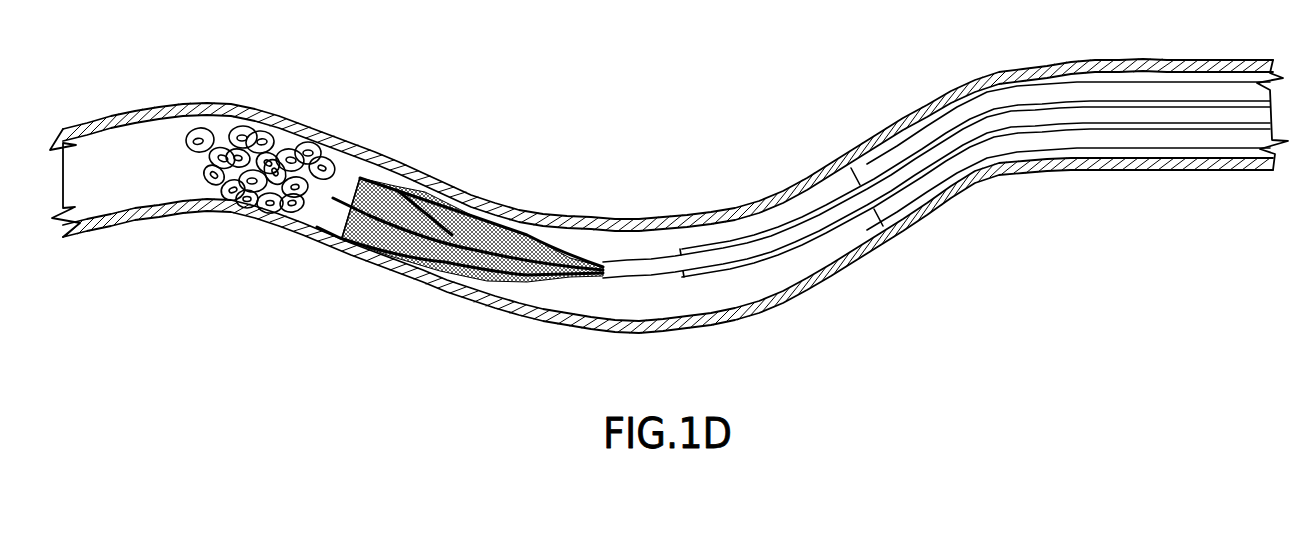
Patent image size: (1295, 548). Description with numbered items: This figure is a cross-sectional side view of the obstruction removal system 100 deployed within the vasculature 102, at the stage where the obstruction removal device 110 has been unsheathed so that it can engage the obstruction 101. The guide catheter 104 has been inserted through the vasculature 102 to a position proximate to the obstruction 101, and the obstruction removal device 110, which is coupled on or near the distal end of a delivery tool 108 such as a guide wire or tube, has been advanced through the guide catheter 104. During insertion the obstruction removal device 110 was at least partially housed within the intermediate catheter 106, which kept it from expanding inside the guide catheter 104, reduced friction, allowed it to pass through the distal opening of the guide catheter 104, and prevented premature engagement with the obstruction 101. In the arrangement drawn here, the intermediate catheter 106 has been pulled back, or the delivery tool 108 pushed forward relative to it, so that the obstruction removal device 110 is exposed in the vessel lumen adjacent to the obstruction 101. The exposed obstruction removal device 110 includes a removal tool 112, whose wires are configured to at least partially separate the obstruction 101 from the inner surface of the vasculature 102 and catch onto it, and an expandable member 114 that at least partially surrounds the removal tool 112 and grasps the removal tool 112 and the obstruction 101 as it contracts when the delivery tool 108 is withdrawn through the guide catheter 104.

The obstruction removal system 100 is at (891, 71).
The obstruction 101 is at (193, 175).
The vasculature 102 is at (665, 217).
The guide catheter 104 is at (1177, 152).
The intermediate catheter 106 is at (772, 253).
The delivery tool 108 is at (822, 220).
The obstruction removal device 110 is at (567, 251).
The removal tool 112 is at (438, 263).
The expandable member 114 is at (363, 230).